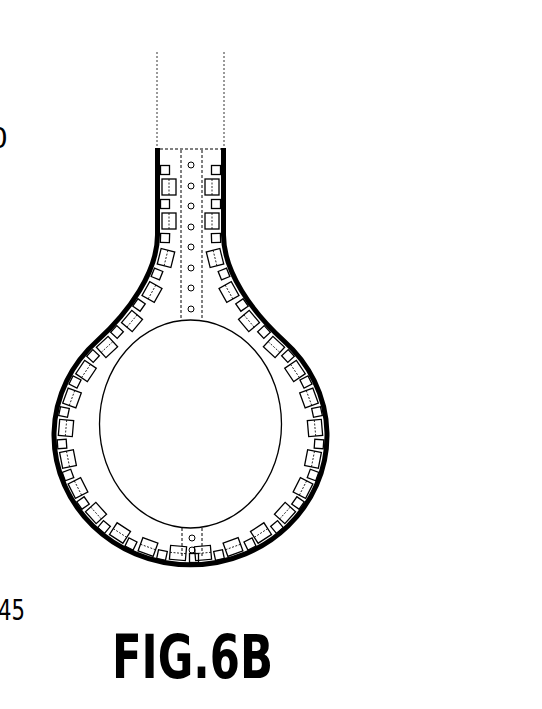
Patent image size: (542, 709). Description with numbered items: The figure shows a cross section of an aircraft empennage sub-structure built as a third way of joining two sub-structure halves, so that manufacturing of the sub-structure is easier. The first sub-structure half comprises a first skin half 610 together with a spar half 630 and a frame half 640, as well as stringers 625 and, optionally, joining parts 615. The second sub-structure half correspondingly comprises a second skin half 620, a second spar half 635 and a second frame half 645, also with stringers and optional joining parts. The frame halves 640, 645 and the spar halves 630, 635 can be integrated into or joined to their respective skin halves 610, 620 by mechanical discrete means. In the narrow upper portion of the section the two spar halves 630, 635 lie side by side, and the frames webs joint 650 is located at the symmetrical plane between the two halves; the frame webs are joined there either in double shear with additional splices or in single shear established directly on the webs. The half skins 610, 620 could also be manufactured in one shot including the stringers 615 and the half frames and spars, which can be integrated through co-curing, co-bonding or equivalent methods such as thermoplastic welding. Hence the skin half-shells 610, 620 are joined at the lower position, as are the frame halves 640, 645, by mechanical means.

The first skin half 610 is at (162, 193).
The joining parts 615 is at (112, 310).
The second skin half 620 is at (228, 227).
The stringers 625 is at (75, 355).
The spar half 630 is at (172, 148).
The second spar half 635 is at (208, 148).
The frame half 640 is at (168, 536).
The second frame half 645 is at (208, 538).
The frames webs joint 650 is at (224, 63).